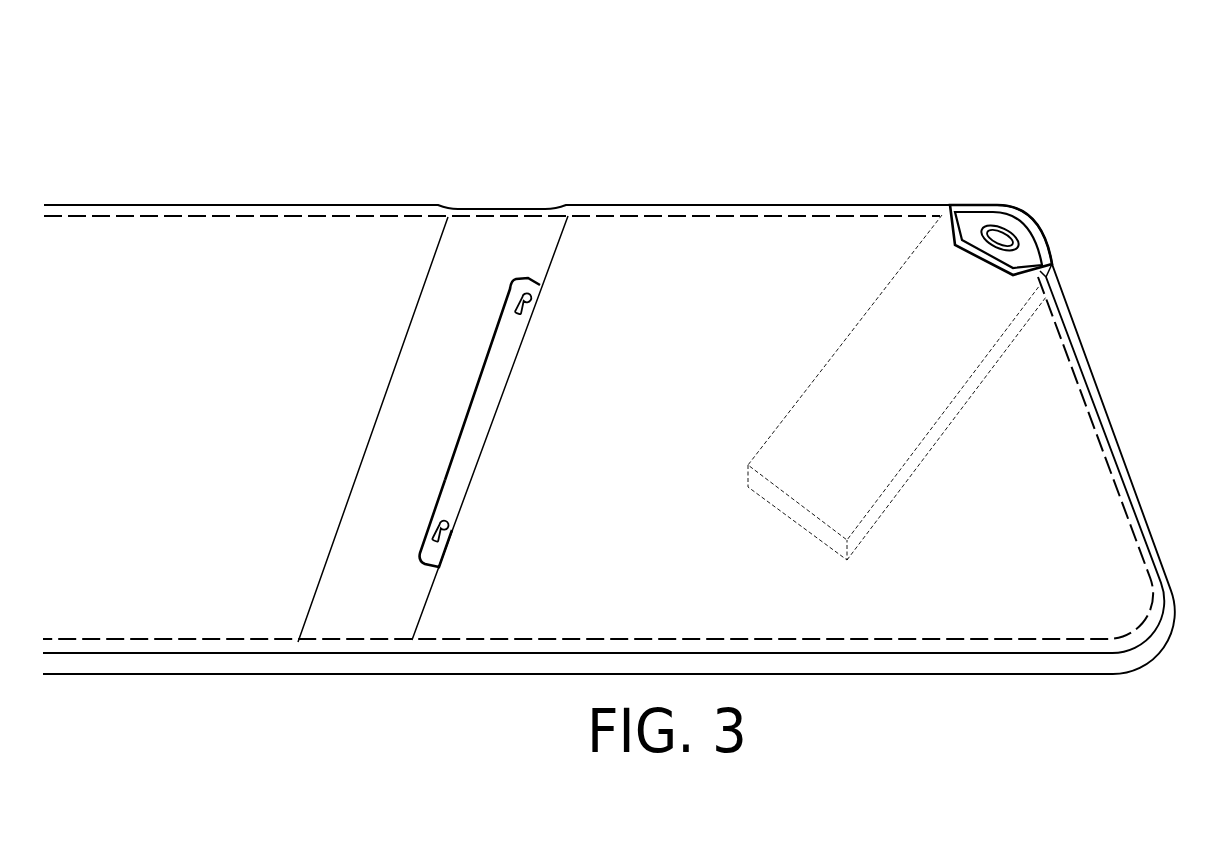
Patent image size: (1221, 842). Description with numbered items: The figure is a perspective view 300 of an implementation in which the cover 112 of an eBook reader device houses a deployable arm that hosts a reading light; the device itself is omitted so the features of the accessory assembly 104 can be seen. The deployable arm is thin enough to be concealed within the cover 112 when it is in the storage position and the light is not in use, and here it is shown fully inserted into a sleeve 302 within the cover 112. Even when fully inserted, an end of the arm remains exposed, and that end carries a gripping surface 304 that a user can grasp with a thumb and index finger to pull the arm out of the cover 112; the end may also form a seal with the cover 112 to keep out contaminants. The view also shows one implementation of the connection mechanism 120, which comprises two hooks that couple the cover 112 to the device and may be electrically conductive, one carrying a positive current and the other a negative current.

The perspective view 300 is at (1144, 64).
The cover 112 is at (276, 176).
The connection mechanism 120 is at (456, 450).
The accessory assembly 104 is at (937, 174).
The gripping surface 304 is at (1055, 277).
The sleeve 302 is at (906, 395).